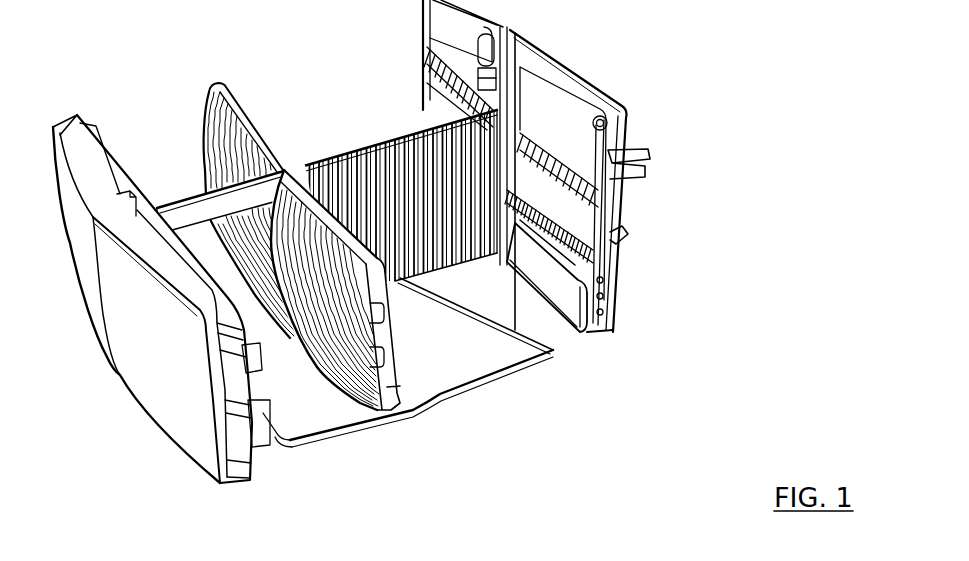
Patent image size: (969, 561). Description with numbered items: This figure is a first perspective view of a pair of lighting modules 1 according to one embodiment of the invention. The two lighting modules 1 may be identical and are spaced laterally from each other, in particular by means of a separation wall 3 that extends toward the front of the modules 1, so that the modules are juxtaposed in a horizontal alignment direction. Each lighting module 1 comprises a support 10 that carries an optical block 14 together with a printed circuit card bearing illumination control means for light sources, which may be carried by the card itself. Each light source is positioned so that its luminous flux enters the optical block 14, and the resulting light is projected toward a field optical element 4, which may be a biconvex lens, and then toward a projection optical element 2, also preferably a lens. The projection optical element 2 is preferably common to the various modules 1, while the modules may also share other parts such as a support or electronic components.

The lighting module 1 is at (388, 241).
The projection optical element 2 is at (172, 407).
The separation wall 3 is at (360, 142).
The field optical element 4 is at (217, 107).
The support 10 is at (607, 212).
The optical block 14 is at (578, 227).